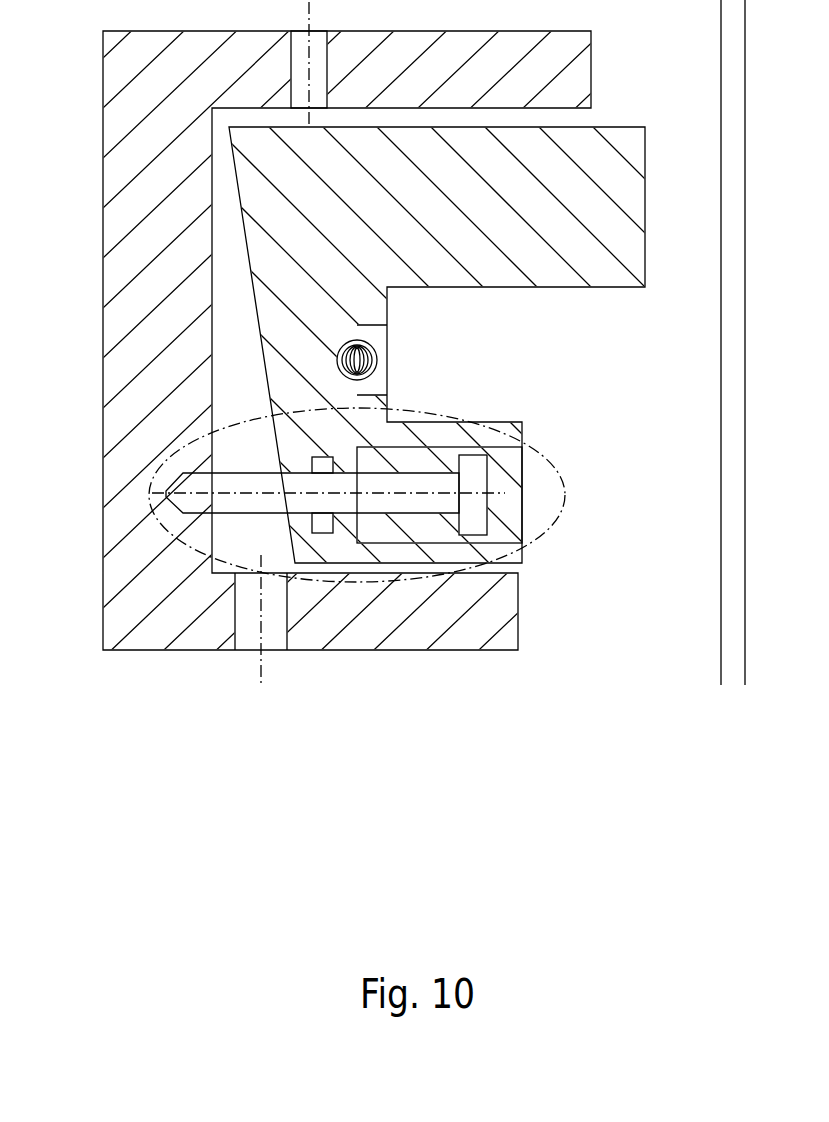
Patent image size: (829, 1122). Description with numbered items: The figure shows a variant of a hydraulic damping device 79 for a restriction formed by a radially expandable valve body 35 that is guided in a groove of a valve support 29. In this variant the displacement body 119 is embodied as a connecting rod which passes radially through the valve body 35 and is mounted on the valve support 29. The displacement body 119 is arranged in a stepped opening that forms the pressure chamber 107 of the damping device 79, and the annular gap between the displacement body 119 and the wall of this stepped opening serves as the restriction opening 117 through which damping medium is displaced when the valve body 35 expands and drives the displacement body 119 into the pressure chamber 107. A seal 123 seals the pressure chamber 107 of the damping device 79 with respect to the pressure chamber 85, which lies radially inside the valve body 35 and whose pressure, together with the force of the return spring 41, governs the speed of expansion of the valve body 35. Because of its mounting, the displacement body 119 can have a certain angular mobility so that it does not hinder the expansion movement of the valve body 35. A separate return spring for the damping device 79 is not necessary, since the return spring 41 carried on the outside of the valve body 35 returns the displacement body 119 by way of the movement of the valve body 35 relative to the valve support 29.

The valve support 29 is at (147, 408).
The valve body 35 is at (290, 293).
The return spring 41 is at (390, 360).
The hydraulic damping device 79 is at (553, 527).
The pressure chamber 85 is at (237, 463).
The pressure chamber 107 is at (440, 532).
The restriction opening 117 is at (473, 538).
The displacement body 119 is at (379, 507).
The seal 123 is at (320, 527).